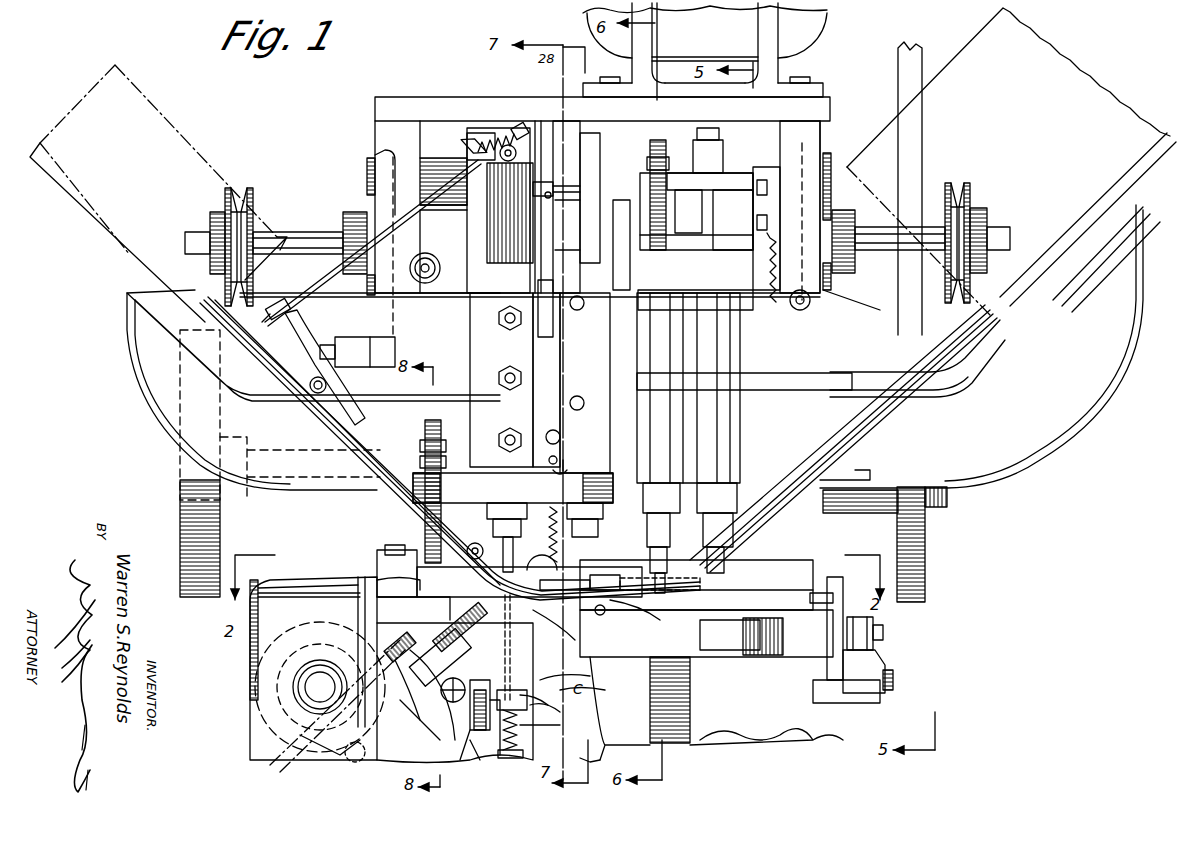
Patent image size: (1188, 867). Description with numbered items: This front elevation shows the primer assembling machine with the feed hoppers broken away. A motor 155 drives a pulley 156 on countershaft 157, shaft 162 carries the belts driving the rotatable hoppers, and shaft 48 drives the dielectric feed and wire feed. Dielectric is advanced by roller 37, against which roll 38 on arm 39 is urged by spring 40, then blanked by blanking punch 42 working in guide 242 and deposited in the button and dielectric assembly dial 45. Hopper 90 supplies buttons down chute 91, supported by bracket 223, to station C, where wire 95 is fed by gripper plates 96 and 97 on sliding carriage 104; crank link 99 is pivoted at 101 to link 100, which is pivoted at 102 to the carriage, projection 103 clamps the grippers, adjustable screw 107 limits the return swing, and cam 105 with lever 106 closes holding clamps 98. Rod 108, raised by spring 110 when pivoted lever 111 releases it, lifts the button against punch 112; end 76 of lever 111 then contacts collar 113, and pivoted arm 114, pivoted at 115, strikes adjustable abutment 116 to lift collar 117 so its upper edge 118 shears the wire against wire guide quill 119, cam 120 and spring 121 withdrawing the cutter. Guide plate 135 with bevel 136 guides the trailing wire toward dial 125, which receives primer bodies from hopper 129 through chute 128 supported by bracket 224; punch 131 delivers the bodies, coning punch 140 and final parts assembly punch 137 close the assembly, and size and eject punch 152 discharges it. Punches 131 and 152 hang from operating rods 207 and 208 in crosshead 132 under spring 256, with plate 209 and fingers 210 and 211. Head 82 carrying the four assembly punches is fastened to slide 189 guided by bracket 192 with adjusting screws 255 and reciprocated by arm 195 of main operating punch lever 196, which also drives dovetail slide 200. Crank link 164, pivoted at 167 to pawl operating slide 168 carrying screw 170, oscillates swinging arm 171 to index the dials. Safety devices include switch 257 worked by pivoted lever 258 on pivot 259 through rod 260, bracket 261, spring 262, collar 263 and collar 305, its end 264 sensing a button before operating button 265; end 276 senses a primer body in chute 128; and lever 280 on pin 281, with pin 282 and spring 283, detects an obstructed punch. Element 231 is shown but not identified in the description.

The feed roller 37 is at (535, 555).
The roll 38 is at (562, 593).
The arm 39 is at (598, 593).
The spring 40 is at (560, 500).
The blanking punch 42 is at (498, 533).
The button and dielectric assembly dial 45 is at (396, 554).
The shaft 48 is at (300, 715).
The end of pivoted lever 76 is at (470, 684).
The head 82 is at (470, 462).
The hopper 90 is at (122, 262).
The chute 91 is at (300, 410).
The wire 95 is at (280, 768).
The lower gripper plate 96 is at (426, 658).
The top gripper plate 97 is at (425, 695).
The holding clamp 98 is at (540, 707).
The crank link 99 is at (365, 625).
The link 100 is at (509, 579).
The pivot 101 is at (385, 597).
The pivot 102 is at (450, 759).
The projection 103 is at (459, 626).
The sliding carriage 104 is at (405, 760).
The cam 105 is at (312, 757).
The lever 106 is at (351, 763).
The adjustable screw 107 is at (394, 646).
The rod 108 is at (578, 680).
The spring 110 is at (527, 742).
The pivoted lever 111 is at (472, 730).
The button assembly punch 112 is at (503, 540).
The collar 113 is at (512, 758).
The pivoted arm 114 is at (495, 757).
The pivot 115 is at (466, 766).
The adjustable abutment 116 is at (556, 726).
The collar 117 is at (564, 711).
The upper edge of collar 118 is at (556, 625).
The wire guide quill 119 is at (496, 647).
The cam 120 is at (300, 660).
The spring 121 is at (596, 697).
The transfer dial 125 is at (730, 657).
The chute 128 is at (870, 437).
The hopper 129 is at (1133, 183).
The primer body delivery punch 131 is at (668, 560).
The crosshead 132 is at (780, 158).
The guide plate 135 is at (635, 624).
The bevel 136 is at (593, 626).
The final parts assembly punch 137 is at (595, 545).
The coning punch 140 is at (640, 510).
The size and eject punch 152 is at (722, 560).
The motor 155 is at (822, 36).
The pulley 156 is at (927, 545).
The countershaft 157 is at (948, 500).
The shaft 162 is at (310, 235).
The crank link 164 is at (872, 660).
The pivot 167 is at (880, 633).
The pawl operating slide 168 is at (825, 670).
The screw 170 is at (845, 585).
The swinging arm 171 is at (757, 657).
The slide 189 is at (490, 280).
The bracket 192 is at (470, 352).
The arm 195 is at (527, 128).
The main operating punch lever 196 is at (475, 133).
The dovetail slide 200 is at (618, 273).
The operating rod 207 is at (622, 290).
The operating rod 208 is at (806, 304).
The plate 209 is at (745, 168).
The finger 210 is at (745, 203).
The finger 211 is at (688, 170).
The bracket 223 is at (660, 592).
The bracket 224 is at (640, 583).
The rod 231 is at (423, 548).
The guide 242 is at (484, 556).
The screws 255 is at (508, 325).
The spring 256 is at (650, 178).
The micro-switch 257 is at (348, 337).
The pivoted lever 258 is at (300, 332).
The pivot 259 is at (316, 395).
The rod 260 is at (322, 288).
The bracket 261 is at (478, 195).
The spring 262 is at (490, 138).
The collar 263 is at (509, 143).
The end of pivoted lever 264 is at (335, 455).
The micro-switch button 265 is at (332, 338).
The outer end of pivoted lever 276 is at (840, 480).
The lever 280 is at (542, 230).
The pin 281 is at (555, 330).
The pin 282 is at (556, 192).
The spring 283 is at (578, 190).
The collar 305 is at (468, 145).